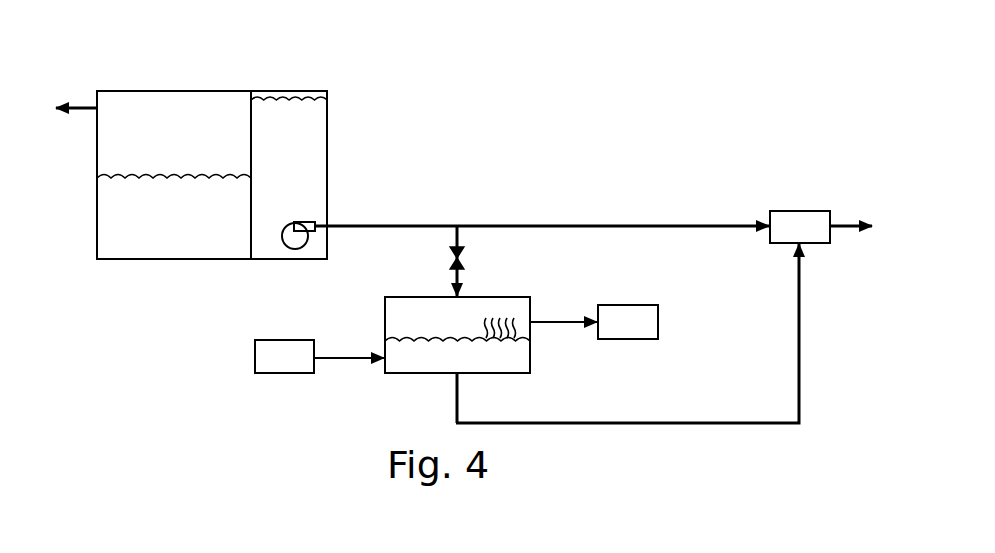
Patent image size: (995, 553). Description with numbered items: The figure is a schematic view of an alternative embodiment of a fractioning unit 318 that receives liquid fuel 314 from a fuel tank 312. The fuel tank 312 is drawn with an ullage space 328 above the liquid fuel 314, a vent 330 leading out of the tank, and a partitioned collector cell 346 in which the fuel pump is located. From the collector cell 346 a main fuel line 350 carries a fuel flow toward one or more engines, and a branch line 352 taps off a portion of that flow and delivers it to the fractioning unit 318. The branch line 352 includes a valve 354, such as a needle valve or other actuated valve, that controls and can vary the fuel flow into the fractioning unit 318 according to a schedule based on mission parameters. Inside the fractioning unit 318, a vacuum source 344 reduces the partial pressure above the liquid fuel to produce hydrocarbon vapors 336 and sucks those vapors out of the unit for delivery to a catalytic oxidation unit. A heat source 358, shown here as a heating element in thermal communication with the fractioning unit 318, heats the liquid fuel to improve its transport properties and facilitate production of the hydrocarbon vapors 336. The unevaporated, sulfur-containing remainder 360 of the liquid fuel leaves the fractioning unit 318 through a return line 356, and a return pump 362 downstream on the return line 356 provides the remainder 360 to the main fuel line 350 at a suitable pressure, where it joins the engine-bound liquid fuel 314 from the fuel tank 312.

The fuel tank 312 is at (231, 86).
The liquid fuel 314 is at (318, 289).
The fractioning unit 318 is at (405, 377).
The ullage space 328 is at (174, 147).
The vent 330 is at (91, 95).
The hydrocarbon vapors 336 is at (508, 316).
The vacuum source 344 is at (594, 322).
The partitioned collector cell 346 is at (323, 86).
The main fuel line 350 is at (377, 222).
The branch line 352 is at (465, 283).
The valve 354 is at (448, 258).
The return line 356 is at (488, 420).
The heat source 358 is at (319, 356).
The remainder 360 is at (627, 333).
The return pump 362 is at (821, 227).